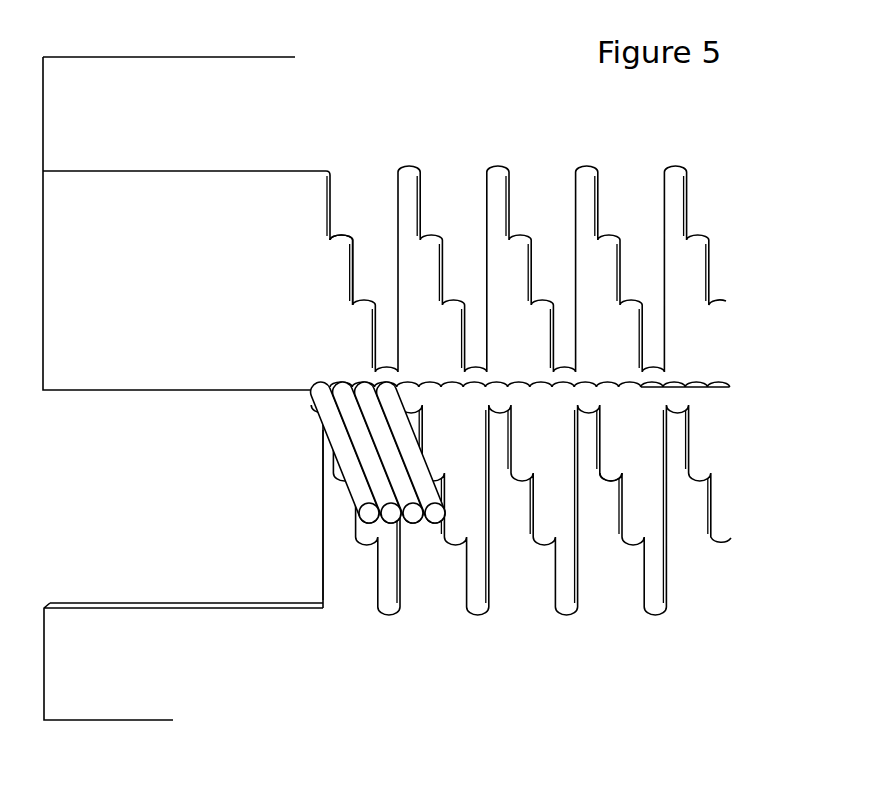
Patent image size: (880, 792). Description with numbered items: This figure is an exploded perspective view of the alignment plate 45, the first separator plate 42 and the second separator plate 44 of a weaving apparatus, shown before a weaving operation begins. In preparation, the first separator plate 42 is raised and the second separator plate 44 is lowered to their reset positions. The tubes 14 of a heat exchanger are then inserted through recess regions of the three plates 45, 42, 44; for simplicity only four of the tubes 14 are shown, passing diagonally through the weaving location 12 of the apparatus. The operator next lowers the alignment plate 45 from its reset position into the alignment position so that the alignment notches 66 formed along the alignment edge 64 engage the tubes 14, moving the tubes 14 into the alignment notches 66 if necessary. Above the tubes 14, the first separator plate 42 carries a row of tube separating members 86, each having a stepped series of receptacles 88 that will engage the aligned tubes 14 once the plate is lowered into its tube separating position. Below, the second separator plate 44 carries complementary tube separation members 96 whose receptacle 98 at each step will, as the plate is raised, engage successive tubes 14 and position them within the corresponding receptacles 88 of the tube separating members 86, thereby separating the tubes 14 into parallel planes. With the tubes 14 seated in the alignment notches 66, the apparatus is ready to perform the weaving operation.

The weaving location 12 is at (303, 437).
The tubes 14 is at (348, 393).
The first separator plate 42 is at (197, 126).
The second separator plate 44 is at (206, 680).
The alignment plate 45 is at (200, 302).
The alignment edge 64 is at (691, 382).
The alignment notches 66 is at (672, 387).
The tube separating members 86 is at (381, 207).
The receptacles 88 is at (343, 247).
The tube separation members 96 is at (624, 587).
The receptacle 98 is at (610, 473).